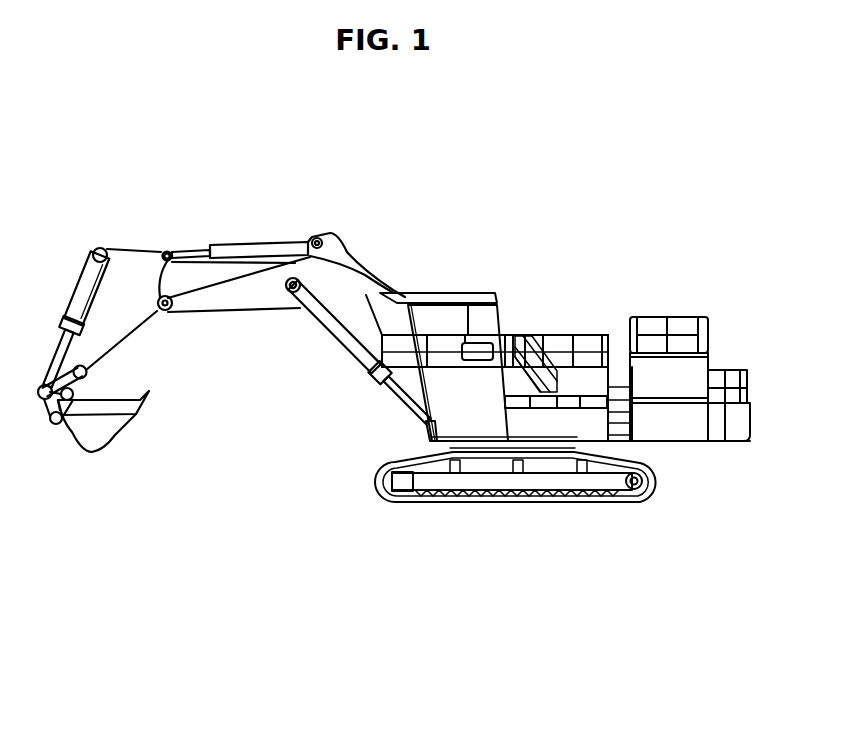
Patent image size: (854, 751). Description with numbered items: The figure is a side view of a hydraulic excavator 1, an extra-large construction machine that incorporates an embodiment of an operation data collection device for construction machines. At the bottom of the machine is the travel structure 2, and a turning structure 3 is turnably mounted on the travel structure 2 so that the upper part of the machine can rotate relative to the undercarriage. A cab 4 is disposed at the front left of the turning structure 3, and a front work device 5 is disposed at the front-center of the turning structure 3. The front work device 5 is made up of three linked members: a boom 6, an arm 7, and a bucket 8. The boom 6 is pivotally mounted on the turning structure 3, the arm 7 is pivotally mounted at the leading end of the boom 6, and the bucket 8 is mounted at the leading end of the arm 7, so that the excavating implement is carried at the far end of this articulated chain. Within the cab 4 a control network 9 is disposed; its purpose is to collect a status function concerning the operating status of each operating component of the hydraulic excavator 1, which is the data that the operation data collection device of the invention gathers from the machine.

The hydraulic excavator 1 is at (216, 196).
The travel structure 2 is at (592, 482).
The turning structure 3 is at (692, 375).
The cab 4 is at (450, 290).
The front work device 5 is at (53, 532).
The boom 6 is at (375, 368).
The arm 7 is at (120, 318).
The bucket 8 is at (87, 425).
The control network 9 is at (477, 358).